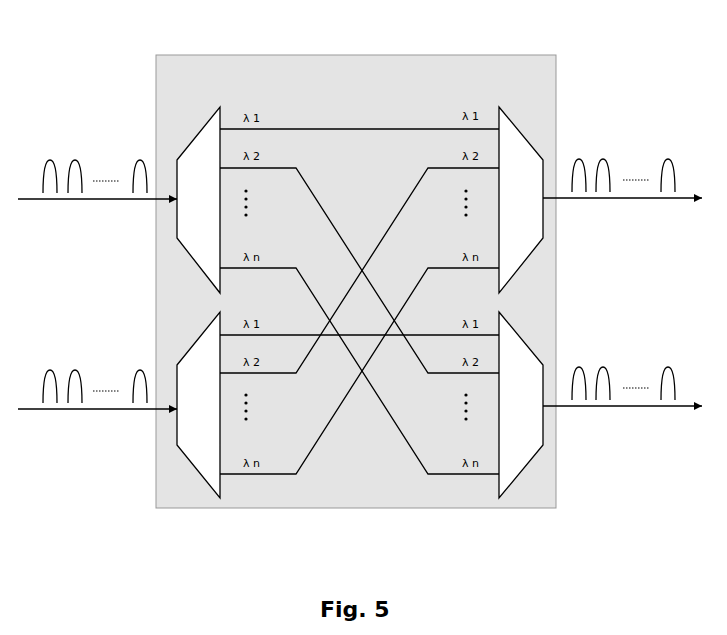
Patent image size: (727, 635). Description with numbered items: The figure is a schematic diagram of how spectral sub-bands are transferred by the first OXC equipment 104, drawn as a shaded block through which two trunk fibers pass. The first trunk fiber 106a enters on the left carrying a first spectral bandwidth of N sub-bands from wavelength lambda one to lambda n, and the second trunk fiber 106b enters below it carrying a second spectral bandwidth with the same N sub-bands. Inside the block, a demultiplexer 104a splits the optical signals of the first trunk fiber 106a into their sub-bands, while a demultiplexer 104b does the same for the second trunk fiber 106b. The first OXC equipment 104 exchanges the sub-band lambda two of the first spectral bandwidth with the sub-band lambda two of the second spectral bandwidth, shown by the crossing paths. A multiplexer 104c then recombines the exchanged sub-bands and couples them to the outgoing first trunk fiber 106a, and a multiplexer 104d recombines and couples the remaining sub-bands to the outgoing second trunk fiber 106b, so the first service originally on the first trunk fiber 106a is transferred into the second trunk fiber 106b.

The first OXC equipment 104 is at (358, 55).
The demultiplexer 104a is at (195, 131).
The demultiplexer 104b is at (195, 473).
The multiplexer 104c is at (526, 128).
The multiplexer 104d is at (522, 478).
The first trunk fiber 106a is at (95, 200).
The second trunk fiber 106b is at (95, 410).